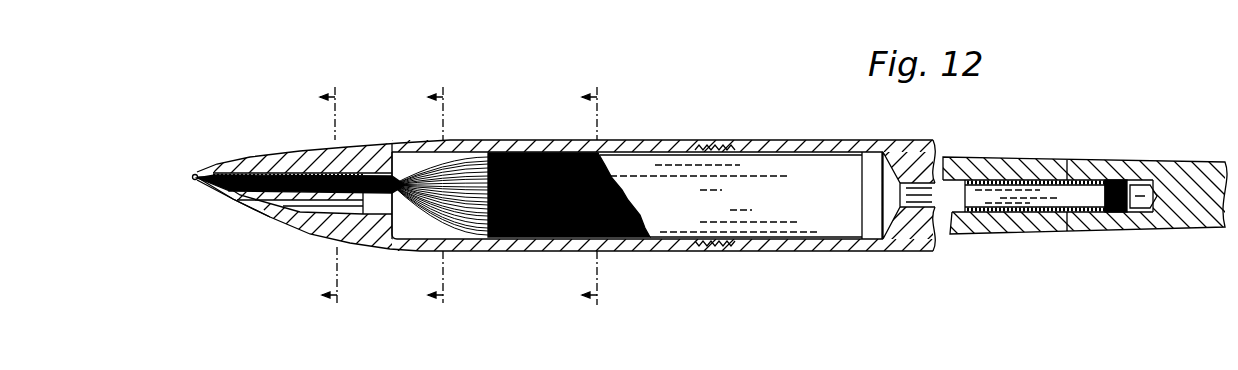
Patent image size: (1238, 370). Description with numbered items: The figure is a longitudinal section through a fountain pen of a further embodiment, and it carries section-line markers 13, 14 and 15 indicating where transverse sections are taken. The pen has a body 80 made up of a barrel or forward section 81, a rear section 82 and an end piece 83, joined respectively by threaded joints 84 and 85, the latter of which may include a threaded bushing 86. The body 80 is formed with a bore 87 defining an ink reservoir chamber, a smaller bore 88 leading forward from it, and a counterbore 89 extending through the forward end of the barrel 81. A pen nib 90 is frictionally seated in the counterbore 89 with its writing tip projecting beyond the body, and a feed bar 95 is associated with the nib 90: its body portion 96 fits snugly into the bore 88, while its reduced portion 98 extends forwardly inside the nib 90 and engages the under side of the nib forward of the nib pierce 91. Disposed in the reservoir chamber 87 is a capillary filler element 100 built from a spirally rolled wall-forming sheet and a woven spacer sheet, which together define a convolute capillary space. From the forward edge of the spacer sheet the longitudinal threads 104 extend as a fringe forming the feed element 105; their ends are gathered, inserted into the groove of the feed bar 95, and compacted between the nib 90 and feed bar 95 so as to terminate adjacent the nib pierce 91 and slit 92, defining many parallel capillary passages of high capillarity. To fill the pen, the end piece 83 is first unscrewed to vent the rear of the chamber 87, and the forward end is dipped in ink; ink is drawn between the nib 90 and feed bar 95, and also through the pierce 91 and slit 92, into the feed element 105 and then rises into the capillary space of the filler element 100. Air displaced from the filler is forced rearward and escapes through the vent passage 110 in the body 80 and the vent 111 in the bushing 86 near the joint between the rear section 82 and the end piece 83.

The body 80 is at (598, 221).
The barrel or forward section 81 is at (657, 248).
The rear section 82 is at (820, 253).
The end piece 83 is at (1155, 223).
The threaded joint 84 is at (720, 248).
The threaded joint 85 is at (1054, 210).
The threaded bushing 86 is at (1013, 208).
The bore 87 is at (397, 244).
The smaller bore 88 is at (377, 246).
The counterbore 89 is at (283, 212).
The pen nib 90 is at (287, 160).
The nib pierce 91 is at (250, 170).
The slit 92 is at (200, 174).
The feed bar 95 is at (305, 213).
The body portion 96 is at (383, 165).
The reduced portion 98 is at (275, 216).
The capillary filler element 100 is at (786, 236).
The longitudinal threads 104 is at (484, 238).
The feed element 105 is at (327, 162).
The vent passage 110 is at (927, 207).
The vent 111 is at (1075, 192).
The section line 13- 13 is at (340, 192).
The section line 14- 14 is at (447, 192).
The section line 15- 15 is at (601, 193).